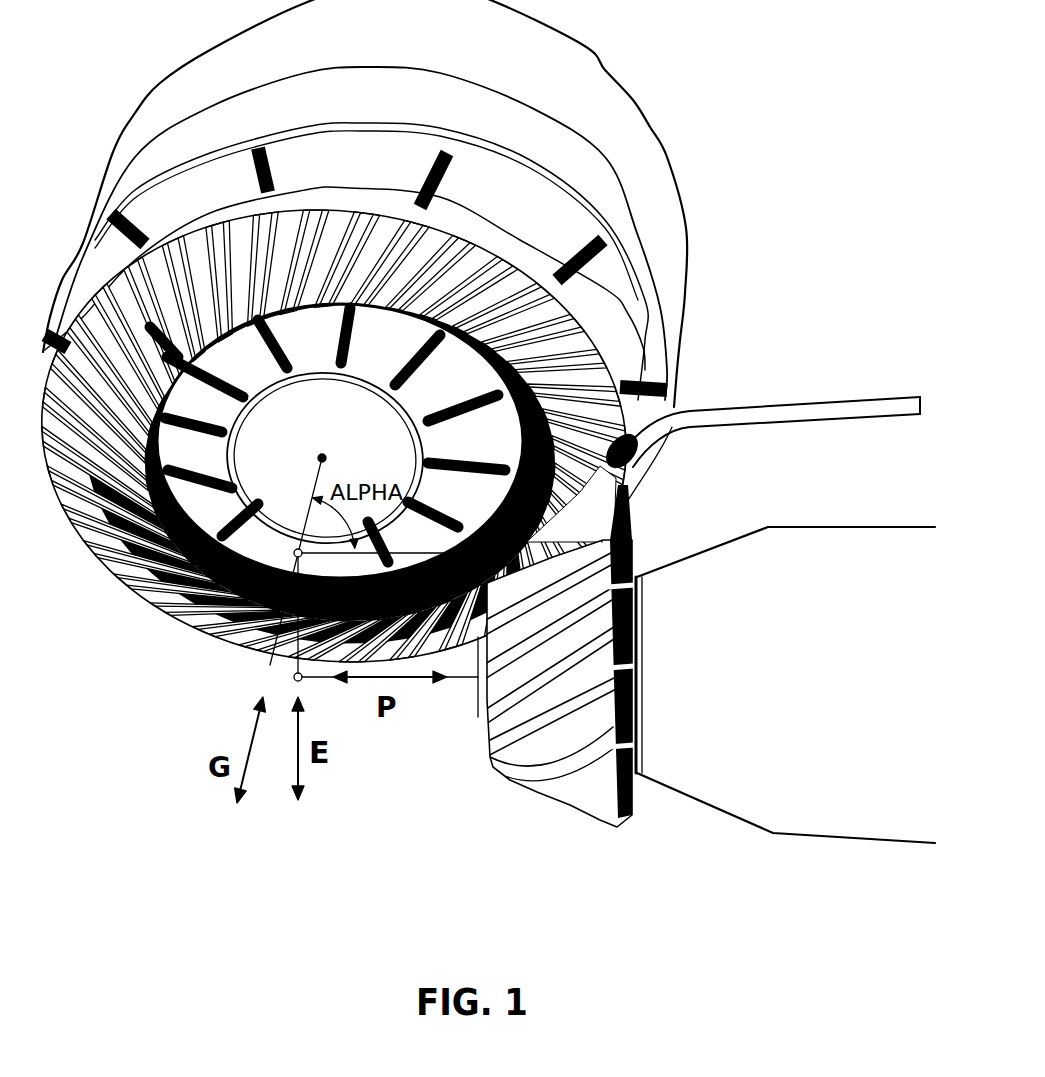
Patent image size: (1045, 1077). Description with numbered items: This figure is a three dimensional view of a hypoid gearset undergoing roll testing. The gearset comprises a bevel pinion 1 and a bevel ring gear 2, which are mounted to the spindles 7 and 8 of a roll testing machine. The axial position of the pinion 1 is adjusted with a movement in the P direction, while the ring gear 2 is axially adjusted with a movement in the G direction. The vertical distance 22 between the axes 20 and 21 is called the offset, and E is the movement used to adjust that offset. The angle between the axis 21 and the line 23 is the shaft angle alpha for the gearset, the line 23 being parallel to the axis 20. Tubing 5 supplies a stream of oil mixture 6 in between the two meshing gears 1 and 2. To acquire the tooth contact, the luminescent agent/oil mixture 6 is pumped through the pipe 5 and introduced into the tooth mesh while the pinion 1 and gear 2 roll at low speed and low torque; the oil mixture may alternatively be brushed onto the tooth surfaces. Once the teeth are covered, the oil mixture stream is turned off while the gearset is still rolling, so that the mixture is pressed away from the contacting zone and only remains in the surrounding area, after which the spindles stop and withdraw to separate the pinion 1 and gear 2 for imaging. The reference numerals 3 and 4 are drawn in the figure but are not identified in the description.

The bevel pinion 1 is at (630, 747).
The bevel ring gear 2 is at (360, 200).
The ring gear 3 is at (250, 637).
The ring gear teeth 4 is at (301, 233).
The tubing 5 is at (737, 397).
The oil mixture 6 is at (677, 473).
The spindle 7 is at (708, 777).
The spindle 8 is at (623, 140).
The axis 20 is at (460, 680).
The axis 21 is at (328, 462).
The vertical distance 22 is at (295, 548).
The line 23 is at (417, 547).